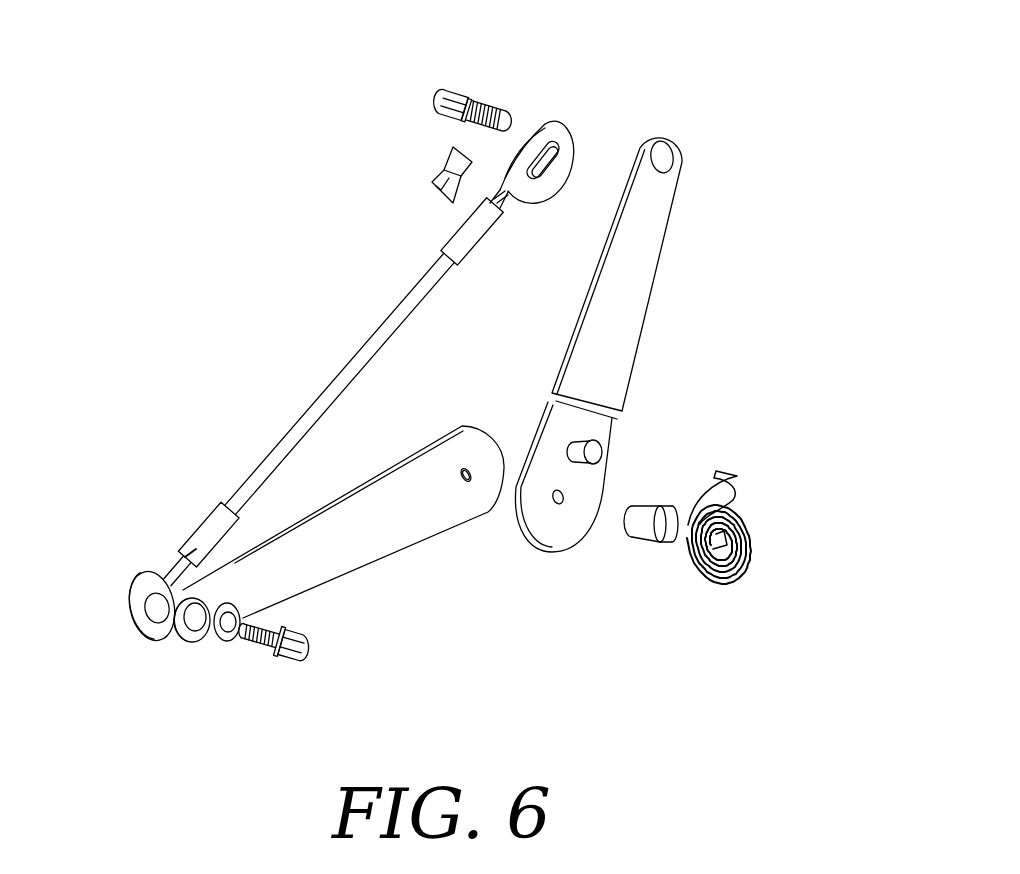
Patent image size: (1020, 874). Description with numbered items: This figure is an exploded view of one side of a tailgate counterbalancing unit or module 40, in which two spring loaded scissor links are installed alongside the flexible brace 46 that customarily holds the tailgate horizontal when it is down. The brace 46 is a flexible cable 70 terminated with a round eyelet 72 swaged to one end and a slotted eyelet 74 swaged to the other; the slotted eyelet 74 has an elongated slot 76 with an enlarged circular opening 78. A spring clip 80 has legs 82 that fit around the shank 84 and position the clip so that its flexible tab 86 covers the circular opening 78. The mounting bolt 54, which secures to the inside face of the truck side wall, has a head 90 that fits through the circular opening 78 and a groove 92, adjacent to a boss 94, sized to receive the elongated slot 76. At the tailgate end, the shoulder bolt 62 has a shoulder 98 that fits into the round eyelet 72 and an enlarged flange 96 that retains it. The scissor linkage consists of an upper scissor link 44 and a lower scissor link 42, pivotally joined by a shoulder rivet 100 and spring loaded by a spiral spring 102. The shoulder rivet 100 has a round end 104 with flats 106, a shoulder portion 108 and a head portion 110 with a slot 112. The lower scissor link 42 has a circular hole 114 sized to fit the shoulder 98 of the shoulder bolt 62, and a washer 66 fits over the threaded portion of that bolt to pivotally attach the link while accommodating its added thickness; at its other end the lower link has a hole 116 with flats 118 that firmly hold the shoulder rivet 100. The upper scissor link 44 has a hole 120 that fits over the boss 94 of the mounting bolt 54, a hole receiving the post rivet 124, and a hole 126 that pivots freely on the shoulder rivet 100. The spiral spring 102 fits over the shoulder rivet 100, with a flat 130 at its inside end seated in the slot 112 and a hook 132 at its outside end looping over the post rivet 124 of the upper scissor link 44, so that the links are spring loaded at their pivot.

The counterbalancing unit or module 40 is at (257, 270).
The lower scissor link 42 is at (377, 560).
The upper scissor link 44 is at (633, 338).
The flexible brace 46 is at (331, 372).
The mounting bolt 54 is at (497, 95).
The shoulder bolt 62 is at (306, 656).
The washer 66 is at (222, 641).
The flexible cable 70 is at (314, 406).
The round eyelet 72 is at (128, 610).
The slotted eyelet 74 is at (546, 124).
The elongated slot 76 is at (553, 143).
The enlarged circular opening 78 is at (543, 176).
The spring clip 80 is at (412, 161).
The legs 82 is at (440, 189).
The shank 84 is at (511, 208).
The flexible tab 86 is at (452, 152).
The head 90 is at (443, 99).
The groove 92 is at (455, 99).
The boss 94 is at (492, 102).
The enlarged flange 96 is at (279, 655).
The shoulder 98 is at (270, 648).
The shoulder rivet 100 is at (645, 546).
The spiral spring 102 is at (752, 566).
The round end 104 is at (630, 514).
The flats 106 is at (628, 520).
The shoulder portion 108 is at (661, 510).
The head portion 110 is at (674, 524).
The slot 112 is at (674, 545).
The circular hole 114 is at (188, 637).
The hole with flats 116 is at (470, 449).
The flats 118 is at (475, 468).
The hole 120 is at (664, 156).
The post rivet 124 is at (601, 452).
The hole 126 is at (556, 503).
The flat 130 is at (726, 538).
The hook 132 is at (740, 478).